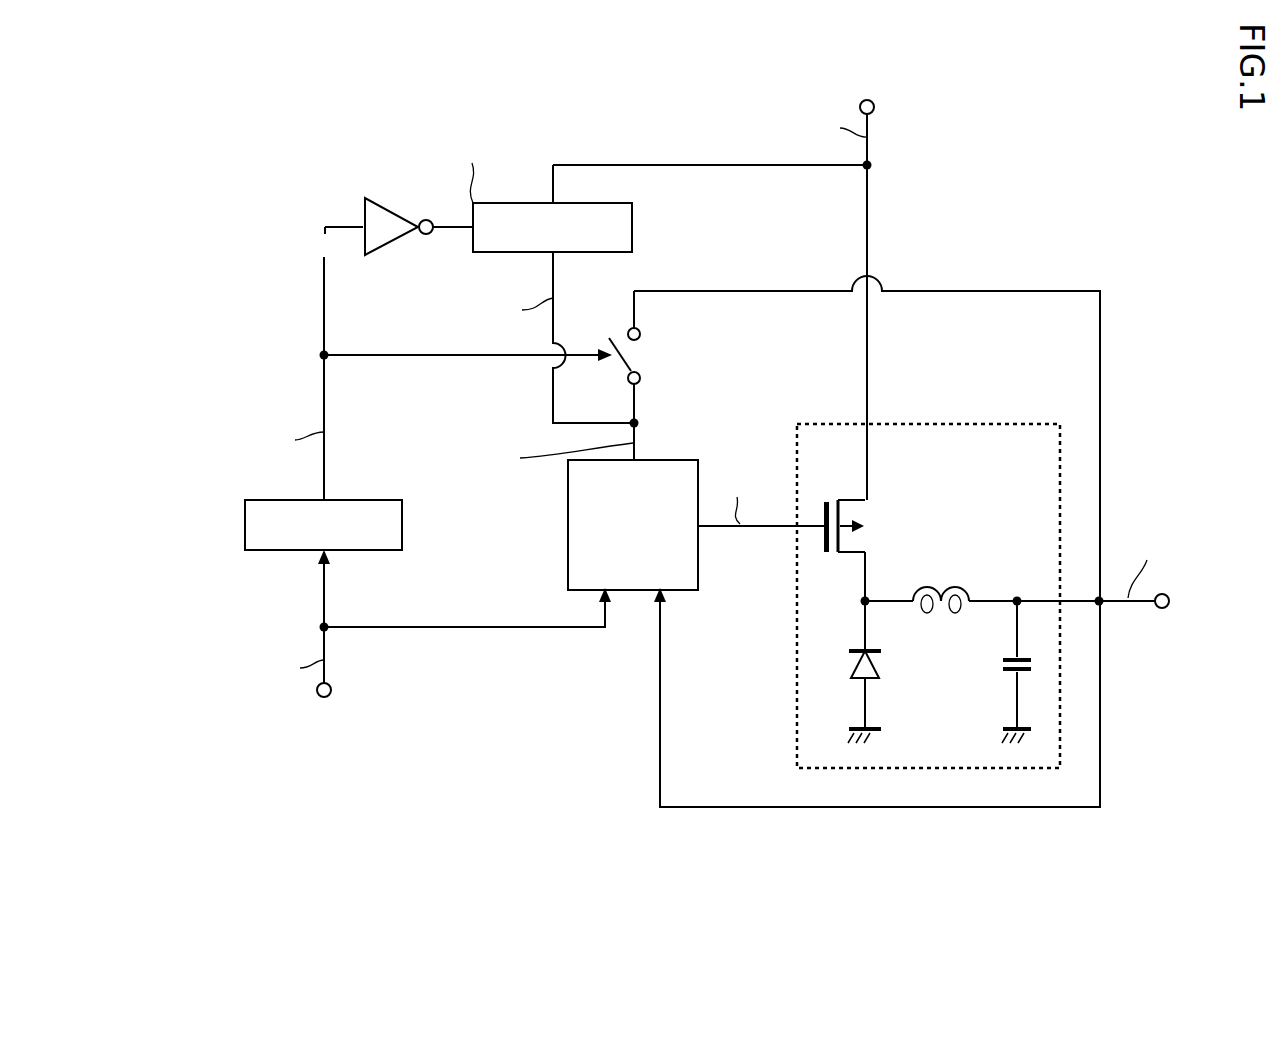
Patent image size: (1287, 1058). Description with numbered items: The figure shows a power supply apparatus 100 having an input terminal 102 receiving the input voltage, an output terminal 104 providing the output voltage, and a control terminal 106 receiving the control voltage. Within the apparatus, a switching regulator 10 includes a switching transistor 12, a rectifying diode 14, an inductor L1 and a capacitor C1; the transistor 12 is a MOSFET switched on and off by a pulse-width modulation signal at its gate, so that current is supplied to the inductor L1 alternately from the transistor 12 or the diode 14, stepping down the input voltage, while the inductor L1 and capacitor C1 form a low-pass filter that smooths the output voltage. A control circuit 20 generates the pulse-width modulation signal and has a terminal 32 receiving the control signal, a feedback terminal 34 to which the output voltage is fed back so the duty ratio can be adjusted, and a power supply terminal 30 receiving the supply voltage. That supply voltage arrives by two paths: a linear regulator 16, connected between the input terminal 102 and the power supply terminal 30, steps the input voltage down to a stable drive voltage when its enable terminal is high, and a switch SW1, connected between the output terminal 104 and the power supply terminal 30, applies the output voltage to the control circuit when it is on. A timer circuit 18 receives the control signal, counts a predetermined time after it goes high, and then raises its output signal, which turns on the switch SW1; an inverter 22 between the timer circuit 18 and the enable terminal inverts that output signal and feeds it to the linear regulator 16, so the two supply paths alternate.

The power supply apparatus 100 is at (708, 893).
The switching regulator 10 is at (965, 424).
The switching transistor 12 is at (862, 539).
The rectifying diode 14 is at (878, 668).
The linear regulator 16 is at (632, 228).
The timer circuit 18 is at (245, 525).
The control circuit 20 is at (568, 523).
The inverter 22 is at (390, 208).
The power supply terminal 30 is at (633, 452).
The terminal 32 is at (602, 598).
The feedback terminal 34 is at (663, 598).
The input terminal 102 is at (874, 110).
The output terminal 104 is at (1165, 608).
The control terminal 106 is at (326, 698).
The switch SW1 is at (640, 360).
The inductor L1 is at (941, 584).
The capacitor C1 is at (1000, 663).